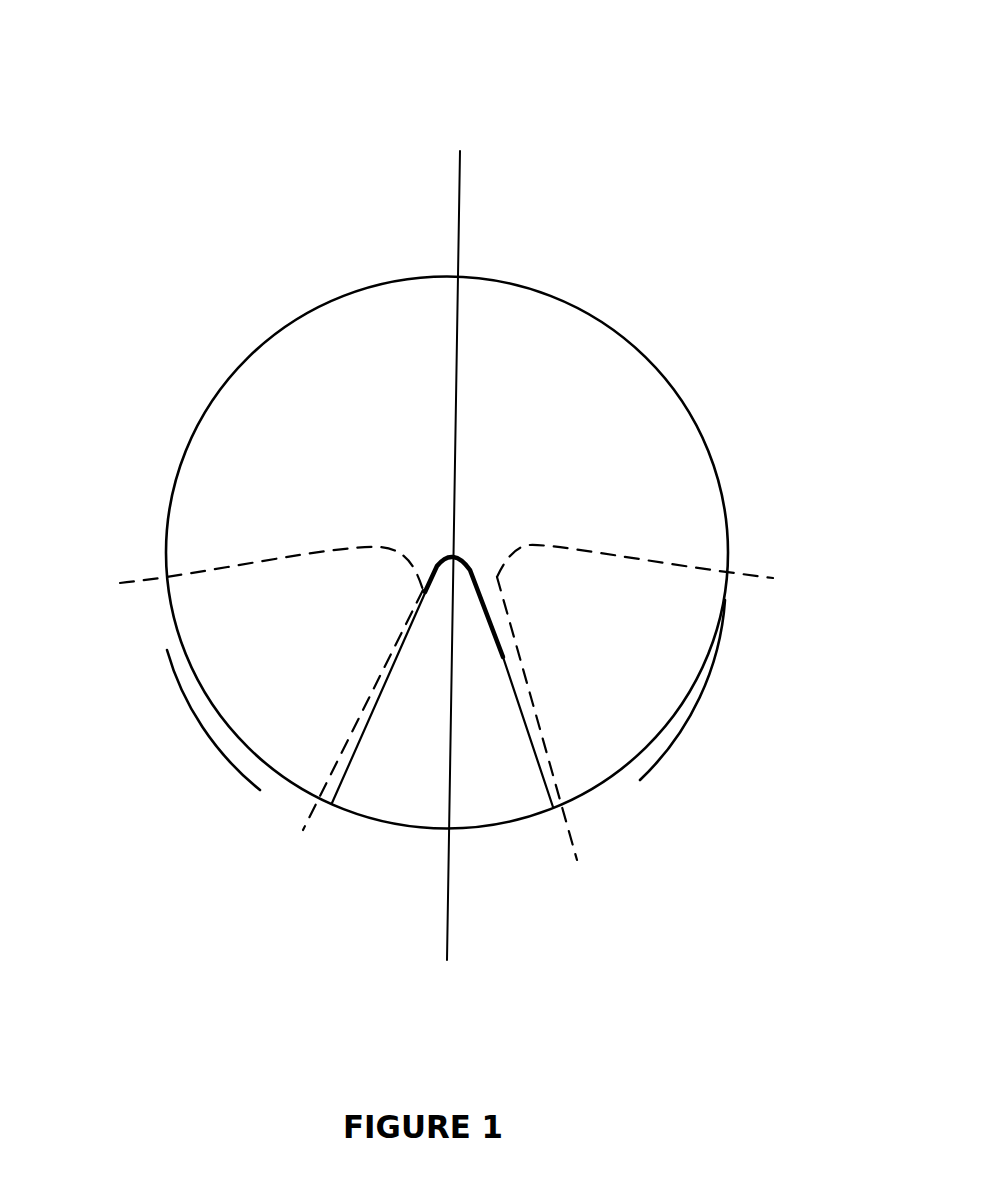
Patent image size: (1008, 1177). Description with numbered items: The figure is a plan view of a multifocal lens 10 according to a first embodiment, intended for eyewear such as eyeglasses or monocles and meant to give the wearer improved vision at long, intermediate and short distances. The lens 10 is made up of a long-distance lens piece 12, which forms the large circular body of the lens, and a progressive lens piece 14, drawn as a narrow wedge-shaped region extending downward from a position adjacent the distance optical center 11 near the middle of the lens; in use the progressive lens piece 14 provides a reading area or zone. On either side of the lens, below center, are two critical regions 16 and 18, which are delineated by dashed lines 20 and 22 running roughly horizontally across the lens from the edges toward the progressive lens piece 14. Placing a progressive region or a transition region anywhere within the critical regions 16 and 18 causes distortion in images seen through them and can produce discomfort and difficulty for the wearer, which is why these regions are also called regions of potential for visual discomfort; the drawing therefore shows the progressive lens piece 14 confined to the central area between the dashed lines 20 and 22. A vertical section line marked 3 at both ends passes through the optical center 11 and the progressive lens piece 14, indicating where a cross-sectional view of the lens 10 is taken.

The multifocal lens 10 is at (737, 110).
The distance optical center 11 is at (455, 537).
The long-distance lens piece 12 is at (658, 367).
The progressive lens piece 14 is at (507, 823).
The critical region 16 is at (200, 667).
The critical region 18 is at (705, 653).
The dashed line 20 is at (135, 586).
The dashed line 22 is at (757, 573).
The section line 3- 3 is at (460, 151).